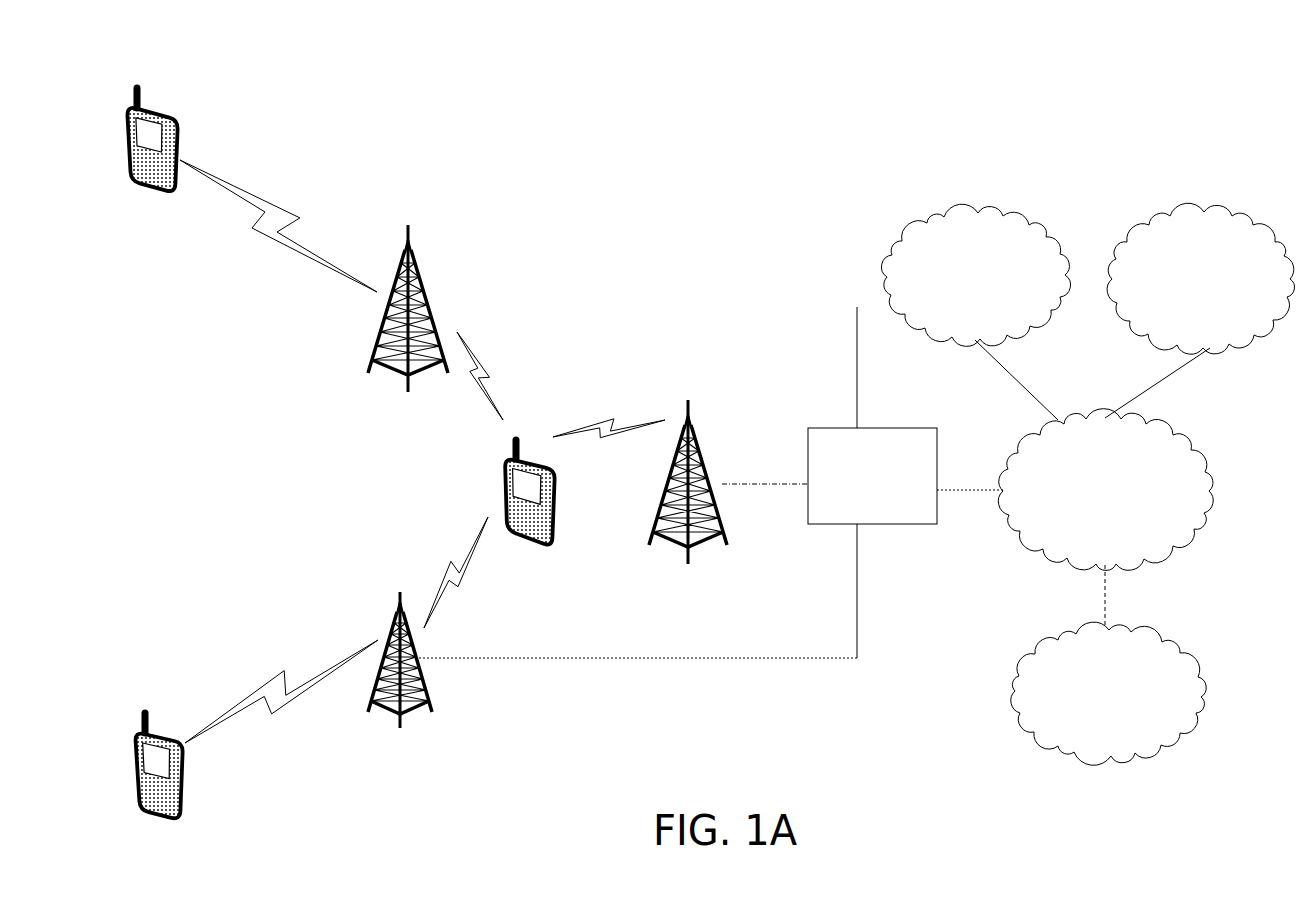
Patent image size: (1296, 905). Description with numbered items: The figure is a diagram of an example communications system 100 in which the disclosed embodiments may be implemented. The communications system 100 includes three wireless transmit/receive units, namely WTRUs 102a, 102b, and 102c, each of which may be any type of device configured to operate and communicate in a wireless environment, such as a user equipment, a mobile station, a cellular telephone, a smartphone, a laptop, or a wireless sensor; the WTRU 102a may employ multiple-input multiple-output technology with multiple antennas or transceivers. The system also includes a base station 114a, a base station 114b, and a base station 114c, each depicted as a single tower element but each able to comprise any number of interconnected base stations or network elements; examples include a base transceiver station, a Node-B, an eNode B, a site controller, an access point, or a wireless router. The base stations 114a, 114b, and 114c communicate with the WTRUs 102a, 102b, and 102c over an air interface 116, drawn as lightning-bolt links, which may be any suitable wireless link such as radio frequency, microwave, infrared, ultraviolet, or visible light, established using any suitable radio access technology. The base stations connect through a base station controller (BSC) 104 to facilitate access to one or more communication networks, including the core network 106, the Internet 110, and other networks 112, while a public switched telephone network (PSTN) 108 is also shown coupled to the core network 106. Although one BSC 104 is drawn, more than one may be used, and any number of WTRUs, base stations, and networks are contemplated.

The communications system 100 is at (731, 53).
The wireless transmit/receive unit (WTRU) 102a is at (529, 507).
The wireless transmit/receive unit (WTRU) 102b is at (152, 162).
The wireless transmit/receive unit (WTRU) 102c is at (161, 780).
The base station controller (BSC) 104 is at (888, 499).
The core network 106 is at (1091, 525).
The public switched telephone network (PSTN) 108 is at (961, 311).
The Internet 110 is at (1089, 727).
The other networks 112 is at (1193, 329).
The base station 114a is at (408, 324).
The base station 114b is at (400, 672).
The base station 114c is at (688, 497).
The air interface 116 is at (422, 451).